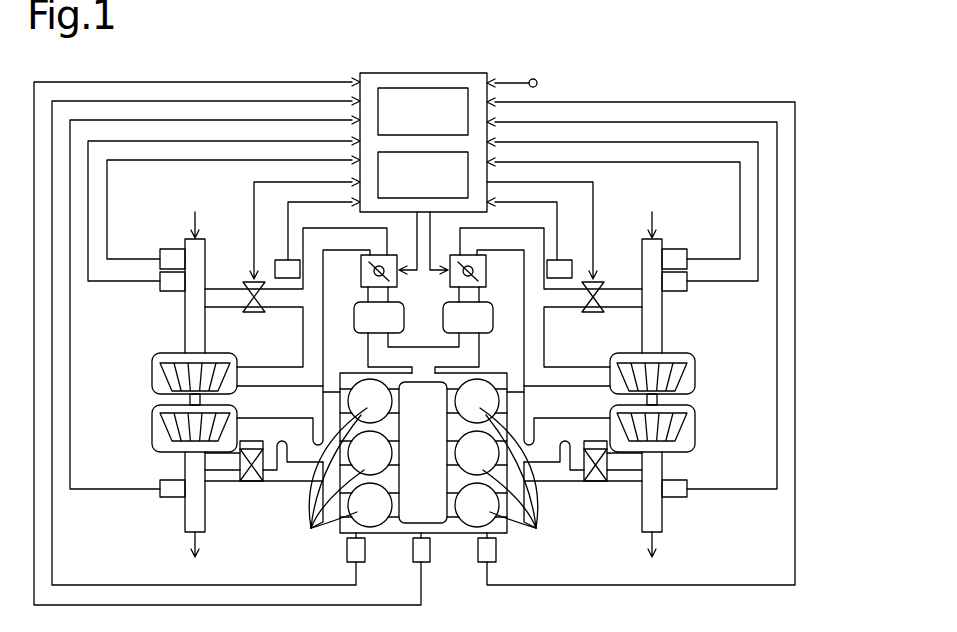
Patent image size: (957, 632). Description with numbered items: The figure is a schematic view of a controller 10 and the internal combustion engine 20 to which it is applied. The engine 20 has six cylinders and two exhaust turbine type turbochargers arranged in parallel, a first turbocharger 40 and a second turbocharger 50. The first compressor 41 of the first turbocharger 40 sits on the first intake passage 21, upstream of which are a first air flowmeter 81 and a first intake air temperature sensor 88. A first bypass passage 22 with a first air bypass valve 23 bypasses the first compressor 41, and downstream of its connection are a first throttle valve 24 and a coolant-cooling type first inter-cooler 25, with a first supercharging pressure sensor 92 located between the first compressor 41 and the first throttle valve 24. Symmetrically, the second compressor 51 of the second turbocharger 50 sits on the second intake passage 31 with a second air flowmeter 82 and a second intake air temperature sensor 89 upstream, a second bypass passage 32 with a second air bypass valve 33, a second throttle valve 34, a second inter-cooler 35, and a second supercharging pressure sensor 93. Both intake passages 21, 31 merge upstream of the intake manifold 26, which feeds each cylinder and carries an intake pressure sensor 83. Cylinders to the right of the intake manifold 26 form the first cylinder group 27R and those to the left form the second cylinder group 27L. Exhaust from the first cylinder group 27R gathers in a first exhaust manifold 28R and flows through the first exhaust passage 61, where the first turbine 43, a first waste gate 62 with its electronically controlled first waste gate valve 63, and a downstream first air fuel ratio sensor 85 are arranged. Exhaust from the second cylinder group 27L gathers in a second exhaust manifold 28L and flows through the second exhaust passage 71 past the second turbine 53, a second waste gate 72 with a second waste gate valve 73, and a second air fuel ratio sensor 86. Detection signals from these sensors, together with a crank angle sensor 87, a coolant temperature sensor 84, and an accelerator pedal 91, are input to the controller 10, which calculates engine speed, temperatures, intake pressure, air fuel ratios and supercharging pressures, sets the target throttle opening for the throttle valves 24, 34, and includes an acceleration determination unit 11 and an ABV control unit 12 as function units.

The controller 10 is at (402, 72).
The acceleration determination unit 11 is at (458, 86).
The ABV control unit 12 is at (445, 213).
The internal combustion engine 20 is at (725, 95).
The first intake passage 21 is at (633, 272).
The first bypass passage 22 is at (628, 307).
The first air bypass valve 23 is at (588, 314).
The first throttle valve 24 is at (487, 272).
The first inter-cooler 25 is at (482, 336).
The intake manifold 26 is at (447, 535).
The second cylinder group 27L is at (342, 468).
The first cylinder group 27R is at (504, 467).
The second exhaust manifold 28L is at (316, 482).
The first exhaust manifold 28R is at (530, 478).
The second intake passage 31 is at (212, 268).
The second bypass passage 32 is at (215, 308).
The second air bypass valve 33 is at (262, 314).
The second throttle valve 34 is at (358, 272).
The second inter-cooler 35 is at (362, 336).
The first turbocharger 40 is at (684, 403).
The first compressor 41 is at (692, 353).
The first turbine 43 is at (690, 454).
The second turbocharger 50 is at (163, 402).
The second compressor 51 is at (168, 353).
The second turbine 53 is at (168, 455).
The first exhaust passage 61 is at (547, 410).
The first waste gate 62 is at (624, 480).
The first waste gate valve 63 is at (592, 487).
The second exhaust passage 71 is at (292, 406).
The second waste gate 72 is at (212, 478).
The second waste gate valve 73 is at (247, 486).
The first air flowmeter 81 is at (675, 293).
The second air flowmeter 82 is at (168, 292).
The intake pressure sensor 83 is at (410, 548).
The coolant temperature sensor 84 is at (344, 552).
The first air fuel ratio sensor 85 is at (671, 518).
The second air fuel ratio sensor 86 is at (170, 500).
The crank angle sensor 87 is at (497, 556).
The first intake air temperature sensor 88 is at (672, 247).
The second intake air temperature sensor 89 is at (174, 247).
The accelerator pedal 91 is at (537, 85).
The first supercharging pressure sensor 92 is at (567, 262).
The second supercharging pressure sensor 93 is at (283, 255).